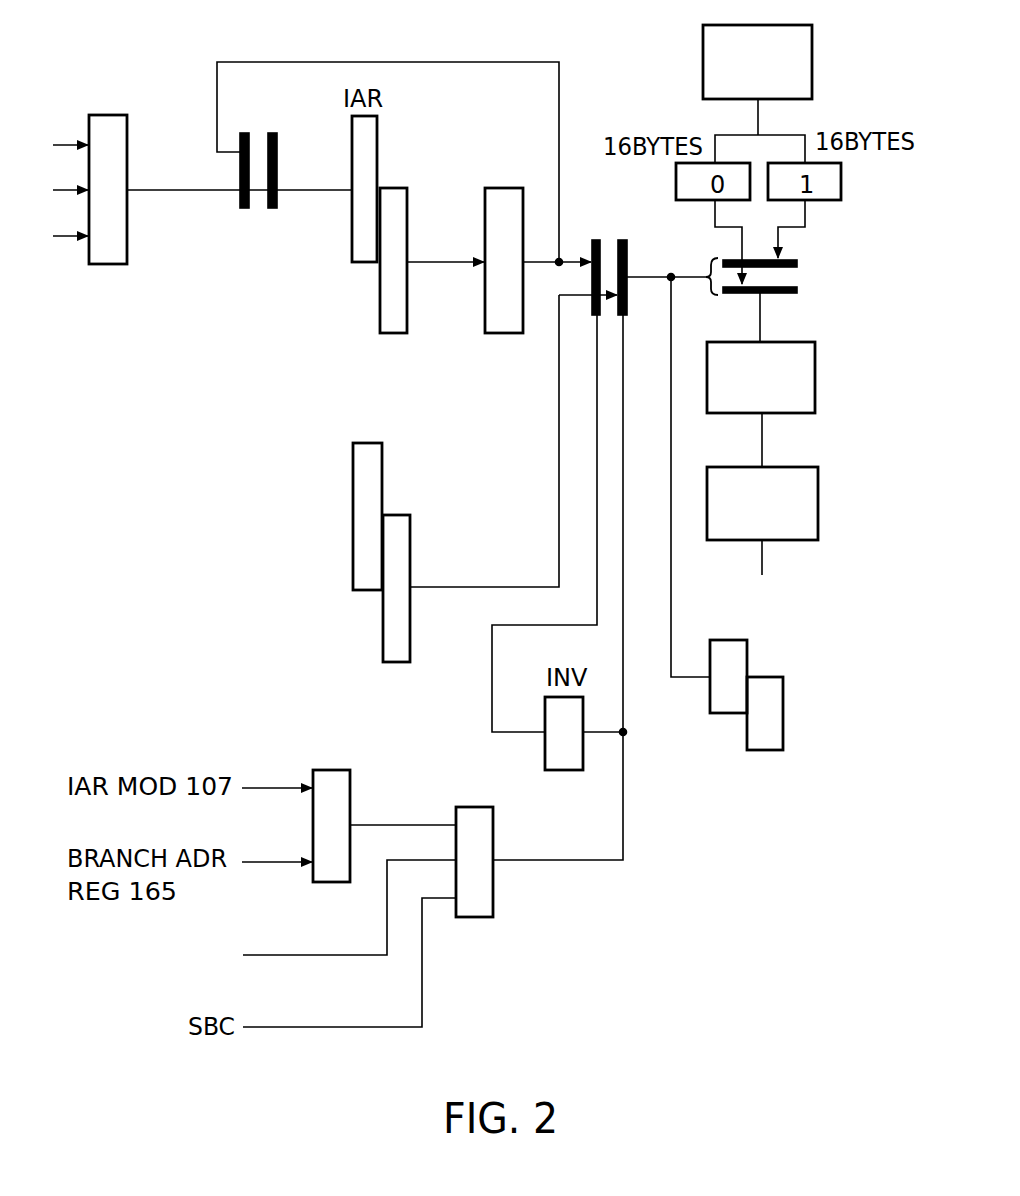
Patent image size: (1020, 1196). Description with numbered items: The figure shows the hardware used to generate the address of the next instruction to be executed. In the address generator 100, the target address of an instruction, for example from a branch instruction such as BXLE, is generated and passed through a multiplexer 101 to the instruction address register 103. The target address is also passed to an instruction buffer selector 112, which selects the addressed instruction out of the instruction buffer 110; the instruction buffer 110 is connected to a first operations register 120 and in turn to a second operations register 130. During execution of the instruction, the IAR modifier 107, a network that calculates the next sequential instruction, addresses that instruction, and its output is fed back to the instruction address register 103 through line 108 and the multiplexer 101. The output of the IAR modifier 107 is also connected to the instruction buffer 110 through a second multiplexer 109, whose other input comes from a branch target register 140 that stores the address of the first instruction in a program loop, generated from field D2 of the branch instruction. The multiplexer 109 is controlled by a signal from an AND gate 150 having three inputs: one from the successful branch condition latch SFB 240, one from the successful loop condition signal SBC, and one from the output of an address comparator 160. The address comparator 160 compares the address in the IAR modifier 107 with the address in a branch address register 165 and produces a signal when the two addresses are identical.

The address generator 100 is at (129, 128).
The multiplexer 101 is at (250, 202).
The instruction address register 103 is at (388, 311).
The IAR modifier 107 is at (493, 318).
The line 108 is at (400, 62).
The multiplexer 109 is at (602, 237).
The instruction buffer 110 is at (783, 68).
The instruction buffer selector 112 is at (823, 241).
The first operations register 120 is at (790, 392).
The second operations register 130 is at (790, 520).
The branch target register 140 is at (372, 503).
The AND gate 150 is at (465, 810).
The address comparator 160 is at (329, 780).
The branch address register 165 is at (748, 751).
The successful branch condition latch 240 is at (296, 915).